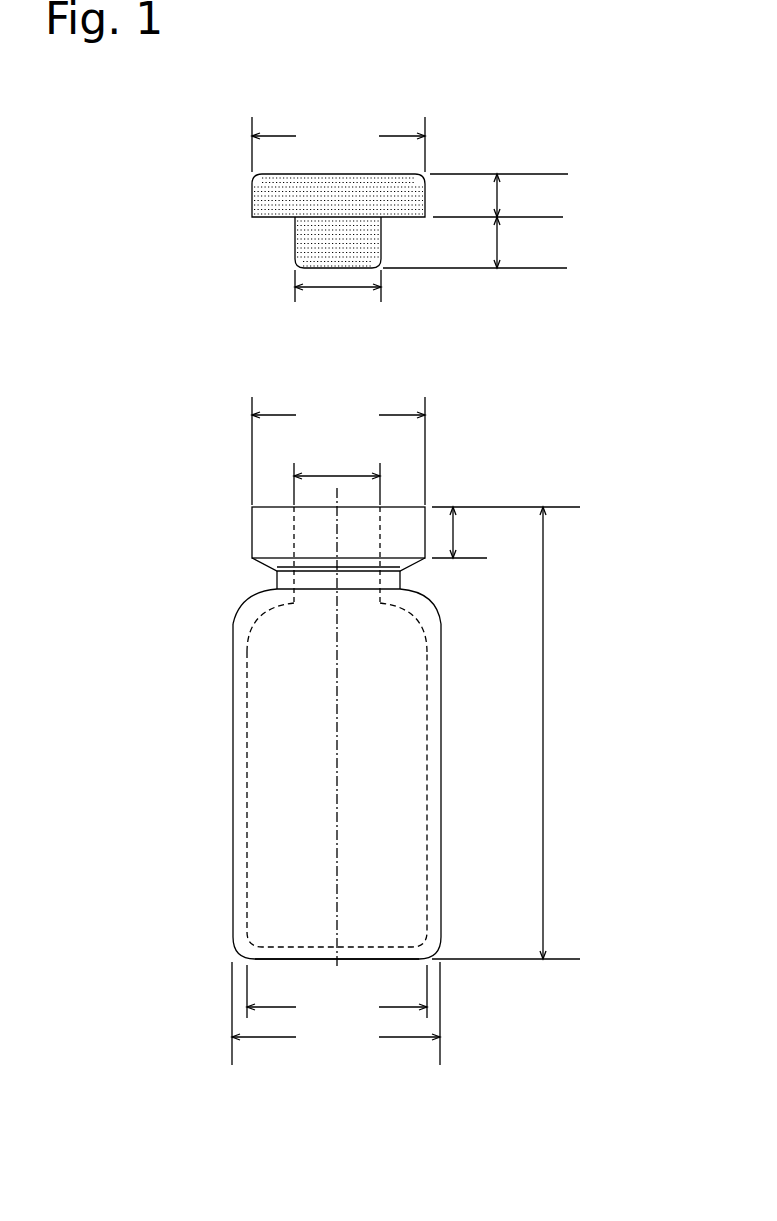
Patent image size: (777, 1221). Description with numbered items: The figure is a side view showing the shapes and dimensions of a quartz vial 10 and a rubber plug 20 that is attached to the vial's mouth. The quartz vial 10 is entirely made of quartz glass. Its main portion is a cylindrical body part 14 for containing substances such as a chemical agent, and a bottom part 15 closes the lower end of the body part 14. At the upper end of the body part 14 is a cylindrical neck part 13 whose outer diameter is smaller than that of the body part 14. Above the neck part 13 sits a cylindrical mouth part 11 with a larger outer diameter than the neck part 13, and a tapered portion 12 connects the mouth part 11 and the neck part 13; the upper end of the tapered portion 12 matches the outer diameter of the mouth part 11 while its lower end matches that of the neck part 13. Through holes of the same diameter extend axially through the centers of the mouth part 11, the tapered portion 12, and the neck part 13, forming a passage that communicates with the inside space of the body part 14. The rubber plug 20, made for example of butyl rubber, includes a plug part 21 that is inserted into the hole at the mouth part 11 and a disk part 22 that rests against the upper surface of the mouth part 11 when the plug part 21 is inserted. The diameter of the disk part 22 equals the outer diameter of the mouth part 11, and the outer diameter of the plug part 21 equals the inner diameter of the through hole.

The quartz vial 10 is at (208, 487).
The mouth part 11 is at (252, 523).
The tapered portion 12 is at (277, 572).
The neck part 13 is at (274, 580).
The body part 14 is at (232, 762).
The bottom part 15 is at (278, 960).
The rubber plug 20 is at (208, 153).
The plug part 21 is at (295, 238).
The disk part 22 is at (252, 184).